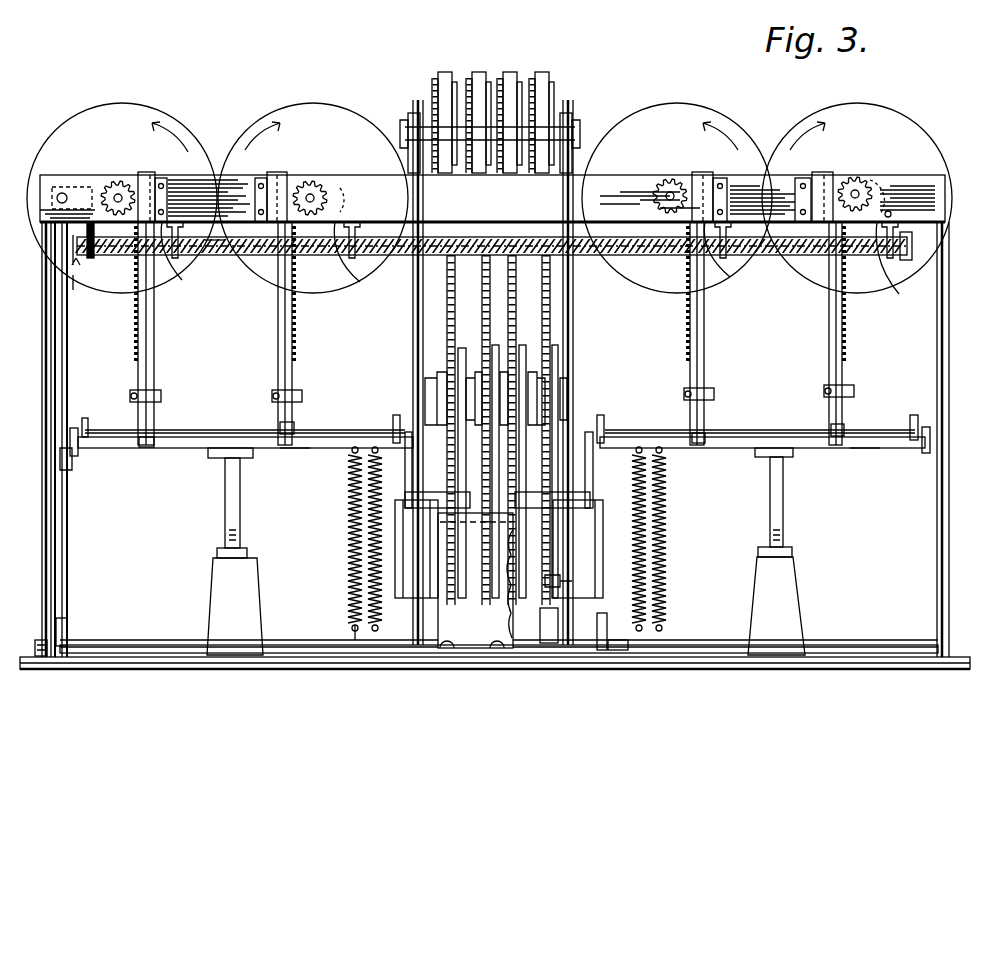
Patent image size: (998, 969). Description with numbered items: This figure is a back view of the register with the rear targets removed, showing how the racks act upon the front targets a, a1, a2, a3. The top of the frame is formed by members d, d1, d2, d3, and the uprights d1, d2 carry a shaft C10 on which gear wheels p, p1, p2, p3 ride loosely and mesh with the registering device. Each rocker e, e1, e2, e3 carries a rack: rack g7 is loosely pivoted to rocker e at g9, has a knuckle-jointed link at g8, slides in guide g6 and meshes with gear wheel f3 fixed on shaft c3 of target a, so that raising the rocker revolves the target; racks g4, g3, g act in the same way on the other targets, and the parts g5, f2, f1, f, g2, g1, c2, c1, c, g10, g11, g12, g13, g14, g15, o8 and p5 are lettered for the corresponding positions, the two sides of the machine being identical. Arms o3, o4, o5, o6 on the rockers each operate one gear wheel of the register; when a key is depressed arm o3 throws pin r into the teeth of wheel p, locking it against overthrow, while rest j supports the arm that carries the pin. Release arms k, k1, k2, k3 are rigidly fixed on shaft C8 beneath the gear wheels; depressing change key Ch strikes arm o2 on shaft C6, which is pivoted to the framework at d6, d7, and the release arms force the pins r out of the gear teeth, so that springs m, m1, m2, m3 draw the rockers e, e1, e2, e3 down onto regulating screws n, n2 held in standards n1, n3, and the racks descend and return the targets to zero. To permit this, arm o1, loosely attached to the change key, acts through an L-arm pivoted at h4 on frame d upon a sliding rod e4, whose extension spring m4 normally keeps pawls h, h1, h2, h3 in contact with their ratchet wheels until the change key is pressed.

The target a is at (122, 198).
The target a1 is at (313, 198).
The target a2 is at (677, 198).
The target a3 is at (857, 197).
The frame d is at (953, 340).
The upright d1 is at (575, 338).
The upright d2 is at (412, 358).
The frame d3 is at (42, 385).
The pivot of shaft c6 d6 is at (38, 642).
The pivot of shaft c6 d7 is at (620, 639).
The pivot of L-arm h4 is at (80, 190).
The gear wheel f3 is at (114, 188).
The guide g6 is at (147, 186).
The bearing block g5 is at (272, 176).
The pinion f2 is at (318, 186).
The pinion f1 is at (668, 185).
The bearing block g2 is at (706, 178).
The bearing block g1 is at (820, 178).
The pinion f is at (860, 180).
The sliding rod e4 is at (250, 258).
The extension spring m4 is at (226, 258).
The shaft of target a c3 is at (118, 222).
The hanger c2 is at (318, 222).
The hanger c1 is at (660, 222).
The hanger c is at (860, 222).
The pawl h is at (182, 280).
The pawl h1 is at (360, 282).
The pawl h2 is at (730, 277).
The pawl h3 is at (892, 265).
The rack g7 is at (155, 348).
The knuckle jointed link g8 is at (162, 396).
The pivot of rack g7 g9 is at (158, 436).
The rack g4 is at (296, 346).
The rack clip g10 is at (303, 396).
The rack foot g11 is at (300, 432).
The rack g3 is at (706, 346).
The rack clip g12 is at (715, 393).
The rack foot g13 is at (712, 432).
The rack g is at (846, 342).
The rack clip g14 is at (855, 390).
The rack foot g15 is at (850, 432).
The rocker e1 is at (237, 436).
The rocker e is at (293, 449).
The rocker e2 is at (794, 436).
The rocker e3 is at (866, 449).
The regulating screw n is at (241, 492).
The standard n1 is at (235, 601).
The regulating screw n2 is at (784, 492).
The standard n3 is at (776, 601).
The spring m is at (346, 510).
The spring m1 is at (366, 545).
The spring m2 is at (648, 512).
The spring m3 is at (668, 548).
The arm o3 is at (366, 560).
The number dials p5 is at (490, 117).
The gear wheel p is at (446, 298).
The gear wheel p1 is at (481, 298).
The gear wheel p2 is at (507, 296).
The gear wheel p3 is at (541, 296).
The release arm k is at (461, 348).
The release arm k1 is at (495, 346).
The release arm k2 is at (523, 346).
The release arm k3 is at (555, 346).
The shaft C10 is at (567, 400).
The arm o1 is at (68, 377).
The arm o2 is at (69, 552).
The foot bracket o8 is at (68, 628).
The change key Ch is at (72, 462).
The shaft C6 is at (148, 645).
The arm o5 is at (584, 509).
The arm o6 is at (402, 598).
The arm o4 is at (598, 580).
The rest j is at (475, 580).
The pin r is at (568, 578).
The shaft C8 is at (538, 632).